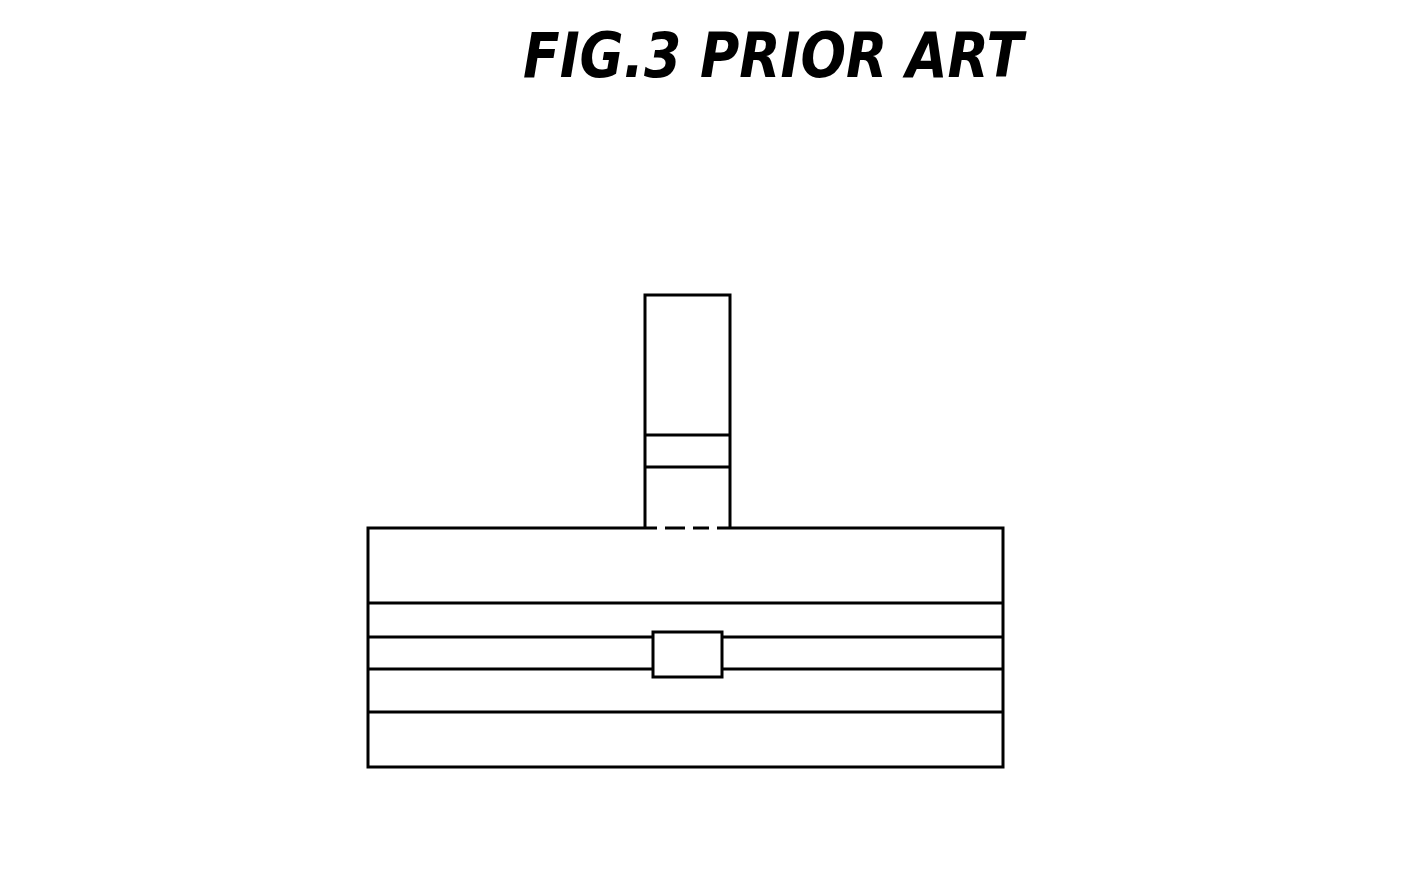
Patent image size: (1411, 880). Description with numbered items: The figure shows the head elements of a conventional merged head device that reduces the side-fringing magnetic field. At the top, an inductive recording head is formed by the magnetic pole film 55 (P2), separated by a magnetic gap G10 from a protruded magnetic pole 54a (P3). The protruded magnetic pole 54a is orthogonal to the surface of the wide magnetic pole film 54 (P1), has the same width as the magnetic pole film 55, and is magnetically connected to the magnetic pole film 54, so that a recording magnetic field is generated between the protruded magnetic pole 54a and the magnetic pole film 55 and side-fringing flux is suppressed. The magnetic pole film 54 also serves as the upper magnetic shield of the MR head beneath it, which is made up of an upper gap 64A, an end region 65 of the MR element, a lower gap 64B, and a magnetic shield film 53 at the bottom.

The other magnetic pole 55 is at (702, 305).
The magnetic gap G10 is at (730, 452).
The protruded magnetic pole 54a is at (653, 492).
The one magnetic pole 54 is at (964, 557).
The upper gap 64A is at (982, 625).
The end region 65 is at (982, 657).
The lower gap 64B is at (985, 693).
The magnetic shield film 53 is at (990, 750).